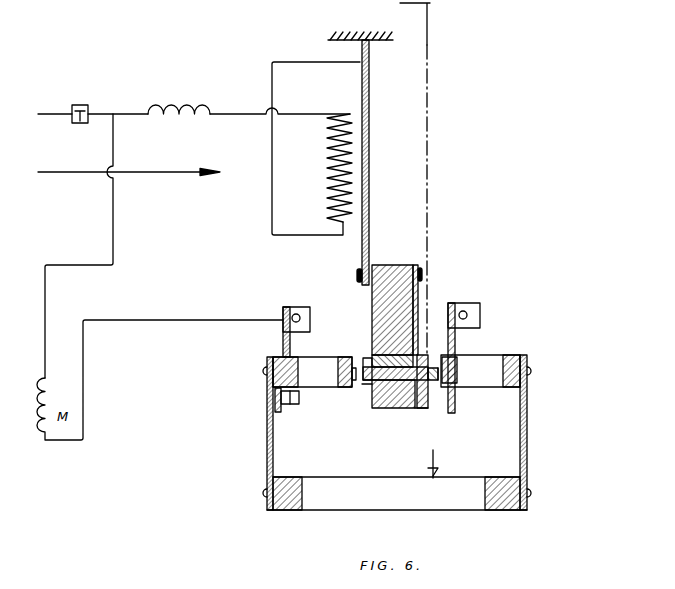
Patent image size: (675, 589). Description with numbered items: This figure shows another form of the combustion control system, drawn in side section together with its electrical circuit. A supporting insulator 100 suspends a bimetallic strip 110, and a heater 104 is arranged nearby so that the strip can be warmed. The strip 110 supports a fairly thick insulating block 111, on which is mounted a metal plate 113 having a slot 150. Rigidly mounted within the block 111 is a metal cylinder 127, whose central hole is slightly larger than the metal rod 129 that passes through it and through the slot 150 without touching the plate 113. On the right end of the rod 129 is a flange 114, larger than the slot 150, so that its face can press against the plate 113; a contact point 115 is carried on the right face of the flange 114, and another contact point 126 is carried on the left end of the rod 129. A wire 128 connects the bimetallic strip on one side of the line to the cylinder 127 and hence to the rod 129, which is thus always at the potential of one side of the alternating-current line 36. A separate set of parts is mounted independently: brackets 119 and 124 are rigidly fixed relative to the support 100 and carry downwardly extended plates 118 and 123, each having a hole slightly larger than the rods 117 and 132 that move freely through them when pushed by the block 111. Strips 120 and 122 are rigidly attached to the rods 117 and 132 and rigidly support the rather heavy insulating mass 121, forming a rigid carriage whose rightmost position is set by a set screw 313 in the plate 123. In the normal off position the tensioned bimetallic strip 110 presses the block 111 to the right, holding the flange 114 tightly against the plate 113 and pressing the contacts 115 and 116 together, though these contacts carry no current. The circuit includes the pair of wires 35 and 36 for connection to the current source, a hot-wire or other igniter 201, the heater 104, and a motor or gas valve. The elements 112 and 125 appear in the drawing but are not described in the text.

The wire 35 is at (52, 114).
The wire 36 is at (52, 172).
The hot-wire igniter 201 is at (168, 112).
The supporting insulator 100 is at (358, 38).
The heater 104 is at (325, 170).
The bimetallic strip 110 is at (369, 216).
The insulating block 111 is at (396, 264).
The pins 112 is at (357, 277).
The metal plate 113 is at (418, 300).
The flange 114 is at (427, 458).
The contact point 115 is at (432, 381).
The contact 116 is at (437, 381).
The rod 117 is at (498, 382).
The downwardly extended plate 118 is at (455, 344).
The bracket 119 is at (477, 318).
The strip 120 is at (528, 421).
The mass 121 is at (472, 498).
The strip 122 is at (265, 450).
The downwardly extended plate 123 is at (283, 331).
The bracket 124 is at (292, 307).
The contact bar 125 is at (350, 388).
The contact point 126 is at (362, 385).
The metal cylinder 127 is at (392, 409).
The wire 128 is at (362, 351).
The metal rod 129 is at (414, 409).
The rod 132 is at (312, 356).
The slot 150 is at (419, 352).
The set screw 313 is at (291, 412).